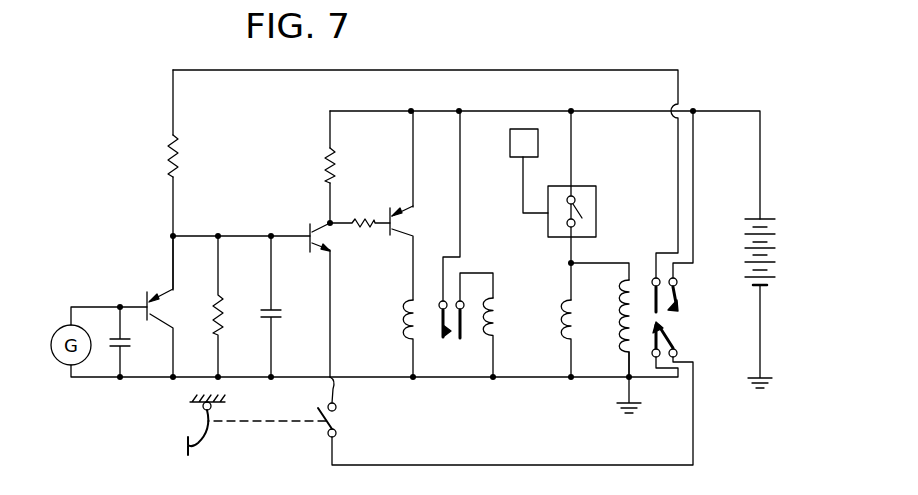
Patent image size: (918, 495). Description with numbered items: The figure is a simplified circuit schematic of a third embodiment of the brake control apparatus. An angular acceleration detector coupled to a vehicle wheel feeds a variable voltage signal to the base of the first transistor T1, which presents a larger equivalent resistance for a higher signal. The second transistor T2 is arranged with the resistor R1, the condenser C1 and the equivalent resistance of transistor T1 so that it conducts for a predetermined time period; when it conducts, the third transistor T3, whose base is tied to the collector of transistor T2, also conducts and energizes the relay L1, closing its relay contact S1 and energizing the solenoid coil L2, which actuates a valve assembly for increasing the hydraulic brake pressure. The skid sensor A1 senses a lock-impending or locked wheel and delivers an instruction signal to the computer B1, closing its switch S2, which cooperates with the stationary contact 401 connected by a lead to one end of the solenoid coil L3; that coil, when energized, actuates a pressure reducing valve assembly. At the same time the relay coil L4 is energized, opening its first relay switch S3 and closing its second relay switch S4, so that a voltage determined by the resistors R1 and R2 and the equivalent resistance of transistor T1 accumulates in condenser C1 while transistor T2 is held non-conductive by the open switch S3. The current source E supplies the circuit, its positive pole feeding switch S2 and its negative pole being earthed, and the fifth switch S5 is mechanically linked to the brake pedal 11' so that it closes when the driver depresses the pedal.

The resistor R2 is at (180, 157).
The resistor R1 is at (214, 310).
The condenser C1 is at (280, 311).
The first transistor T1 is at (151, 298).
The second transistor T2 is at (316, 226).
The third transistor T3 is at (397, 210).
The relay L1 is at (412, 330).
The solenoid coil L2 is at (500, 322).
The solenoid coil L3 is at (566, 320).
The relay coil L4 is at (622, 318).
The relay contact S1 is at (454, 337).
The switch S2 is at (596, 210).
The first relay switch S3 is at (678, 336).
The second relay switch S4 is at (682, 303).
The fifth switch S5 is at (337, 420).
The skid sensor A1 is at (510, 144).
The computer B1 is at (578, 185).
The stationary contact 401 is at (567, 224).
The brake pedal 11' is at (191, 425).
The current source E is at (772, 254).